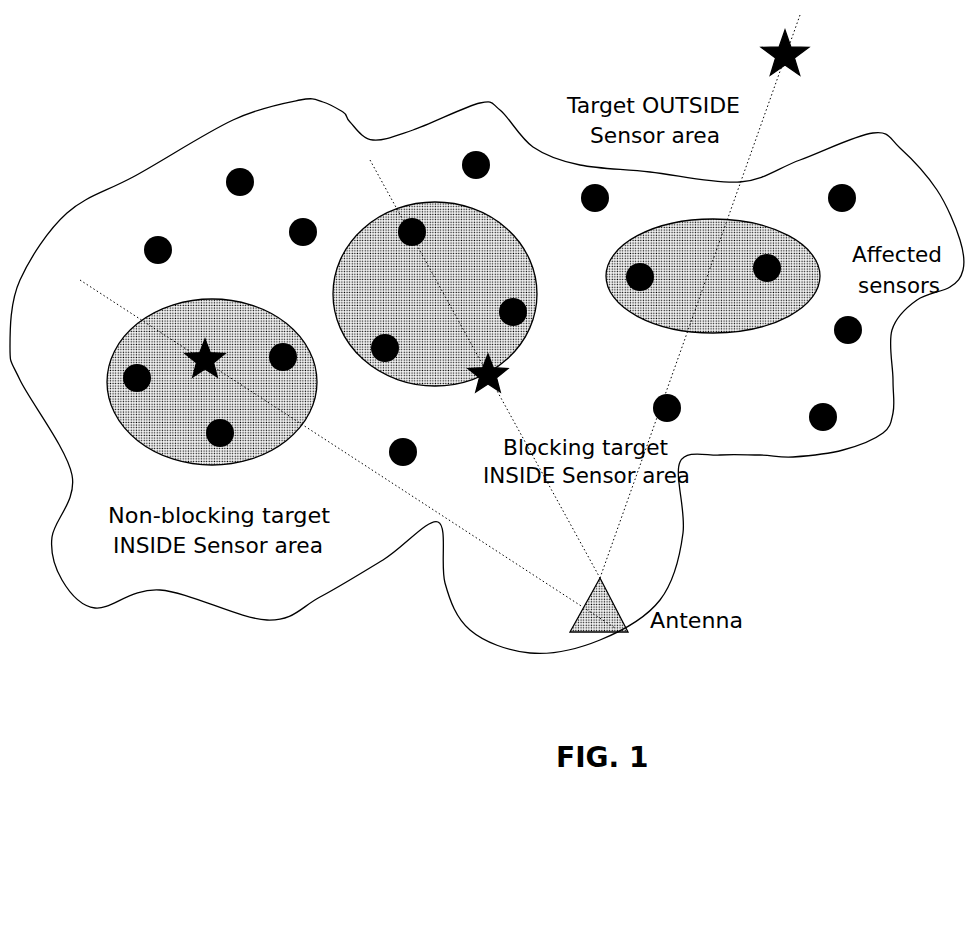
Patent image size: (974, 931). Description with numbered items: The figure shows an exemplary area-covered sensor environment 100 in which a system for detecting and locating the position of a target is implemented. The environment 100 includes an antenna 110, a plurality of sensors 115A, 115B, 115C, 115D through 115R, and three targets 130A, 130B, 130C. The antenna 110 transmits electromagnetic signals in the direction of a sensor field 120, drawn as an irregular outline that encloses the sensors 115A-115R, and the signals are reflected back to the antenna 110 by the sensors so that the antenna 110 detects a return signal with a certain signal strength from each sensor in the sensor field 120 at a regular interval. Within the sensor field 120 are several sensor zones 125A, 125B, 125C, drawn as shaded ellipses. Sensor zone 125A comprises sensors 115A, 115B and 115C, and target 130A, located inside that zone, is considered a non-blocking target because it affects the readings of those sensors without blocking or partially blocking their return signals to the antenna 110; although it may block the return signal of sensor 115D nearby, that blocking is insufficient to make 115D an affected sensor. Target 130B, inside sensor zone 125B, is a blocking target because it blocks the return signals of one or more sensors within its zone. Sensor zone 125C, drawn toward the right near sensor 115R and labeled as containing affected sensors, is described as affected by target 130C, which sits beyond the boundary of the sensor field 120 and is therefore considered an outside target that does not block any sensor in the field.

The area-covered sensor environment 100 is at (130, 680).
The antenna 110 is at (570, 632).
The sensor 115A is at (122, 378).
The sensor 115B is at (284, 350).
The sensor 115C is at (208, 432).
The sensor 115D is at (143, 250).
The sensor 115R is at (808, 418).
The sensor field 120 is at (137, 174).
The sensor zone 125A is at (286, 443).
The sensor zone 125B is at (388, 206).
The sensor zone 125C is at (648, 321).
The non-blocking target 130A is at (206, 350).
The blocking target 130B is at (480, 390).
The outside target 130C is at (798, 56).